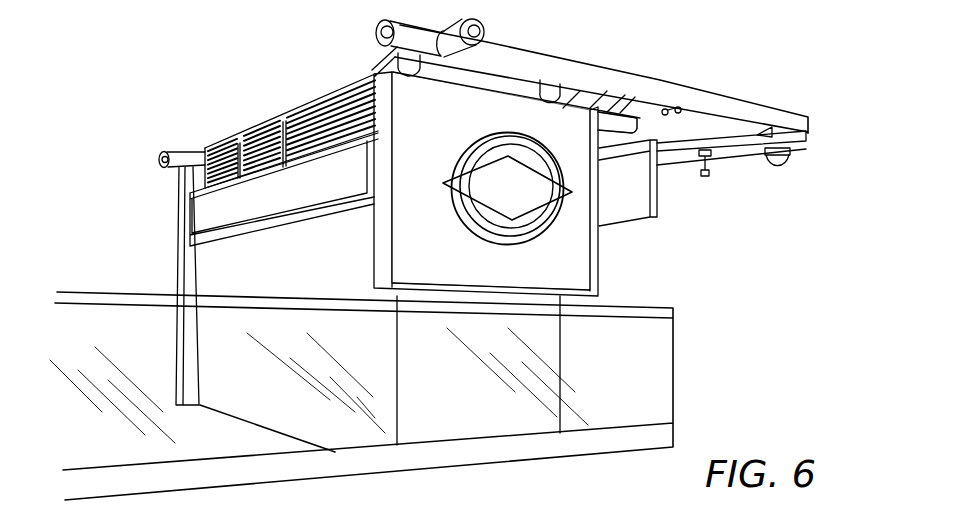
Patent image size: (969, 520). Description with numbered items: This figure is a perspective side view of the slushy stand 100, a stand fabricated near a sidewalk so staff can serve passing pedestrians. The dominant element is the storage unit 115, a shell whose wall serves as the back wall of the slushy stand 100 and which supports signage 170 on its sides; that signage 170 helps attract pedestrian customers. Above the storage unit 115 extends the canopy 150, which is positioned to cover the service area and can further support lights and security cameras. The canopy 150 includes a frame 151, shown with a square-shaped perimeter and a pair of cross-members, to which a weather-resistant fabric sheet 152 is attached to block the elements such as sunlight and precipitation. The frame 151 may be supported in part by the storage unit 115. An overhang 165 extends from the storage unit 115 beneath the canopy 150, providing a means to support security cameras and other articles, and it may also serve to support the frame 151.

The slushy stand 100 is at (489, 273).
The storage unit 115 is at (298, 178).
The canopy 150 is at (608, 130).
The frame 151 is at (607, 78).
The weather-resistant fabric sheet 152 is at (692, 137).
The overhang 165 is at (619, 136).
The signage 170 is at (443, 235).